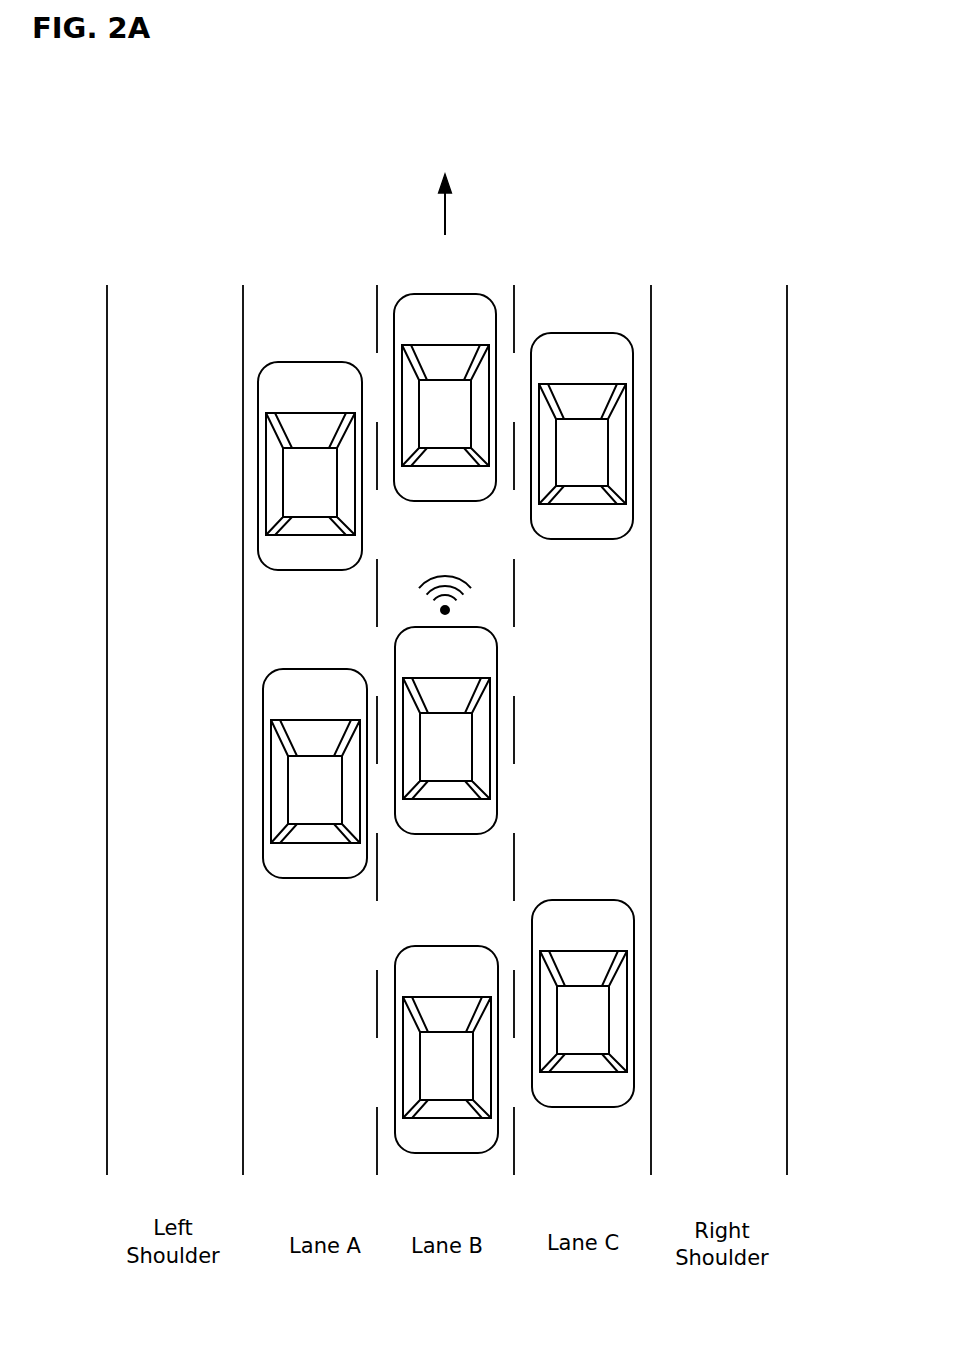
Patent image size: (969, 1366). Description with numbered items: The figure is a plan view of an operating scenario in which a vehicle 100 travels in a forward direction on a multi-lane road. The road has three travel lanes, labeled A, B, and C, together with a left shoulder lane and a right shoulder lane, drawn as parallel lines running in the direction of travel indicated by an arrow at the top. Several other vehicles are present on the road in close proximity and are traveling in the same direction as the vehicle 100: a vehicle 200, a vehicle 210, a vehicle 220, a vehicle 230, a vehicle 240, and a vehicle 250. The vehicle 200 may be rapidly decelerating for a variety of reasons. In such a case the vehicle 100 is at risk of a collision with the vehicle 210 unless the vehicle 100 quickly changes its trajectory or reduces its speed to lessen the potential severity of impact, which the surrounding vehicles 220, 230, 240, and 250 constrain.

The vehicle 100 is at (497, 679).
The vehicle 200 is at (496, 305).
The vehicle 210 is at (395, 1079).
The vehicle 220 is at (633, 415).
The vehicle 230 is at (634, 936).
The vehicle 240 is at (258, 463).
The vehicle 250 is at (263, 772).